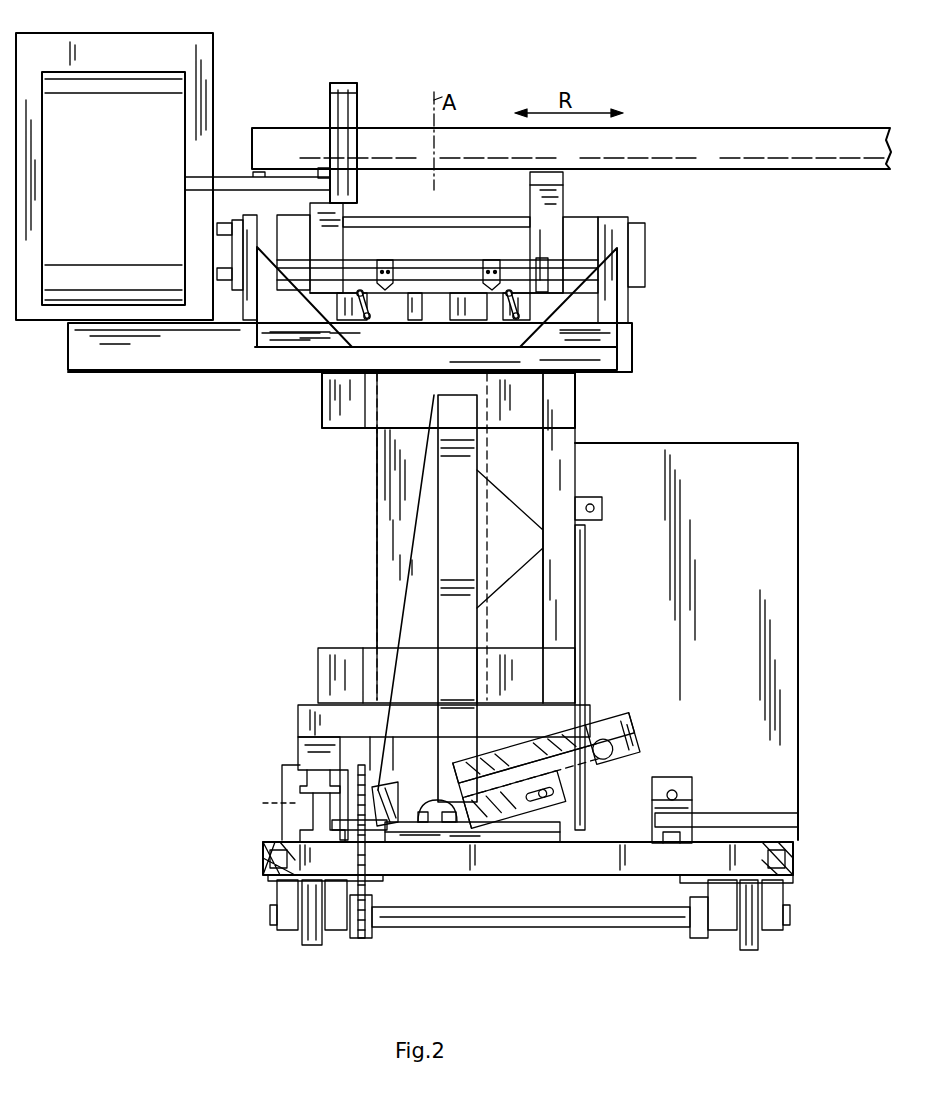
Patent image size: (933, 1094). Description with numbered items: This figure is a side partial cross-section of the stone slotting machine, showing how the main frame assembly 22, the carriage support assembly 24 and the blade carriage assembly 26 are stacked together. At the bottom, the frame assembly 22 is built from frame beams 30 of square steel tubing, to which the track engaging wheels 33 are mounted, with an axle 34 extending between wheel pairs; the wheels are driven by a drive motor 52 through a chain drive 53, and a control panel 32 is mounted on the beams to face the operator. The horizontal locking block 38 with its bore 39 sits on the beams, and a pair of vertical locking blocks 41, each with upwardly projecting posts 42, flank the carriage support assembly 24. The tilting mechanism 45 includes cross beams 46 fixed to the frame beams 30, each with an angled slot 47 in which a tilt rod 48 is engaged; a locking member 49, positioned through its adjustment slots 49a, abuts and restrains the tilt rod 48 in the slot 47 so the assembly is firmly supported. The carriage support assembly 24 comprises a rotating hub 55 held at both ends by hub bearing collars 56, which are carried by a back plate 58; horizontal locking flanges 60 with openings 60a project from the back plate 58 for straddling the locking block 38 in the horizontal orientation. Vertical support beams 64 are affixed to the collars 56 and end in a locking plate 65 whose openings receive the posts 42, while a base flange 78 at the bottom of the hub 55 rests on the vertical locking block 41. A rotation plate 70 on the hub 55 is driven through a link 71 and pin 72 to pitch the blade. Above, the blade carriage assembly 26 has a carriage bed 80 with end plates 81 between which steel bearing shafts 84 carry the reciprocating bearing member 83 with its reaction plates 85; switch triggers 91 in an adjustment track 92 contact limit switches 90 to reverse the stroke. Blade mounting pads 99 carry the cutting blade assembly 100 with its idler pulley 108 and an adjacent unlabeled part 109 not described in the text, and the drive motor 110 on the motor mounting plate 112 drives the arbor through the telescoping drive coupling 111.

The motor mounting plate 112 is at (118, 35).
The drive motor 110 is at (112, 190).
The universal telescoping drive coupling 111 is at (225, 178).
The blade carriage assembly 26 is at (185, 372).
The carriage bed 80 is at (628, 350).
The end plates 81 is at (243, 308).
The steel bearing shafts 84 is at (287, 230).
The reciprocator reaction plates 85 is at (334, 233).
The reciprocating bearing member 83 is at (458, 244).
The switch triggers 91 is at (385, 260).
The limit switches 90 is at (367, 318).
The adjustment track 92 is at (543, 258).
The idler pulley 108 is at (357, 97).
The bracket cap 109 is at (345, 83).
The blade mounting pads 99 is at (323, 160).
The cutting blade assembly 100 is at (762, 134).
The carriage support assembly 24 is at (343, 438).
The hub bearing collars 56 is at (533, 410).
The rotating hub 55 is at (377, 555).
The back plate 58 is at (568, 483).
The vertical support beams 64 is at (416, 601).
The horizontal locking flanges 60 is at (602, 503).
The opening 60a is at (593, 525).
The control panel 32 is at (784, 444).
The rotation plate 70 is at (312, 712).
The link 71 is at (299, 754).
The pin 72 is at (308, 788).
The drive motor 52 is at (268, 802).
The base flange 78 is at (340, 800).
The chain drive 53 is at (362, 940).
The locking plate 65 is at (420, 828).
The posts 42 is at (452, 825).
The vertical locking blocks 41 is at (493, 840).
The angled slot 47 is at (552, 717).
The cross beams 46 is at (636, 741).
The tilt rod 48 is at (602, 770).
The locking member 49 is at (540, 807).
The adjustment slots 49a is at (543, 832).
The tilting mechanism 45 is at (591, 752).
The horizontal locking block 38 is at (680, 780).
The bore 39 is at (678, 794).
The frame beams 30 is at (798, 840).
The main frame assembly 22 is at (797, 877).
The track engaging wheels 33 is at (308, 945).
The axle 34 is at (640, 928).